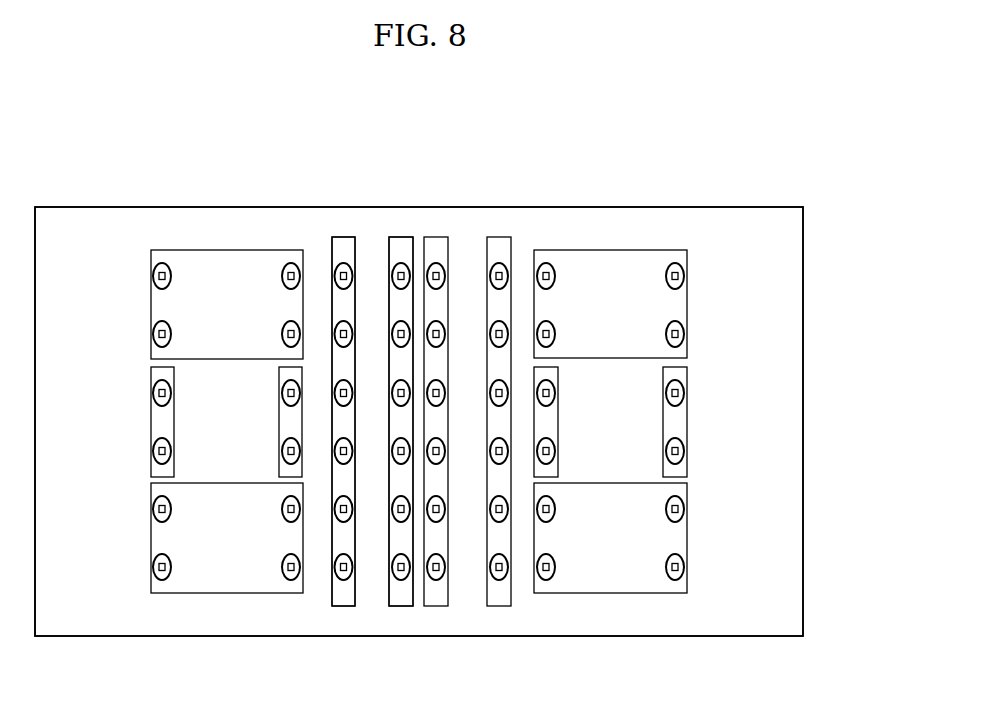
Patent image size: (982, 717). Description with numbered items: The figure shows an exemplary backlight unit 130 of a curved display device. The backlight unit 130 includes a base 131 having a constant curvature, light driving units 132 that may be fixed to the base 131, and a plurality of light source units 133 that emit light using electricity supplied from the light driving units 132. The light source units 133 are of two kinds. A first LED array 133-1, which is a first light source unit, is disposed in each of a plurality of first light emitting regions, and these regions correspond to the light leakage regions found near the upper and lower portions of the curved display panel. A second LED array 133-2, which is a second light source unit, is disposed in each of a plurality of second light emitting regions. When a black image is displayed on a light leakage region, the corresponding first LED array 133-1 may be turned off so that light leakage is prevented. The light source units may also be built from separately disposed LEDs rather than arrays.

The backlight unit 130 is at (677, 192).
The base 131 is at (602, 622).
The light driving unit 132 is at (400, 600).
The light source unit 133 is at (389, 580).
The first LED array 133-1 is at (151, 302).
The second LED array 133-2 is at (151, 420).